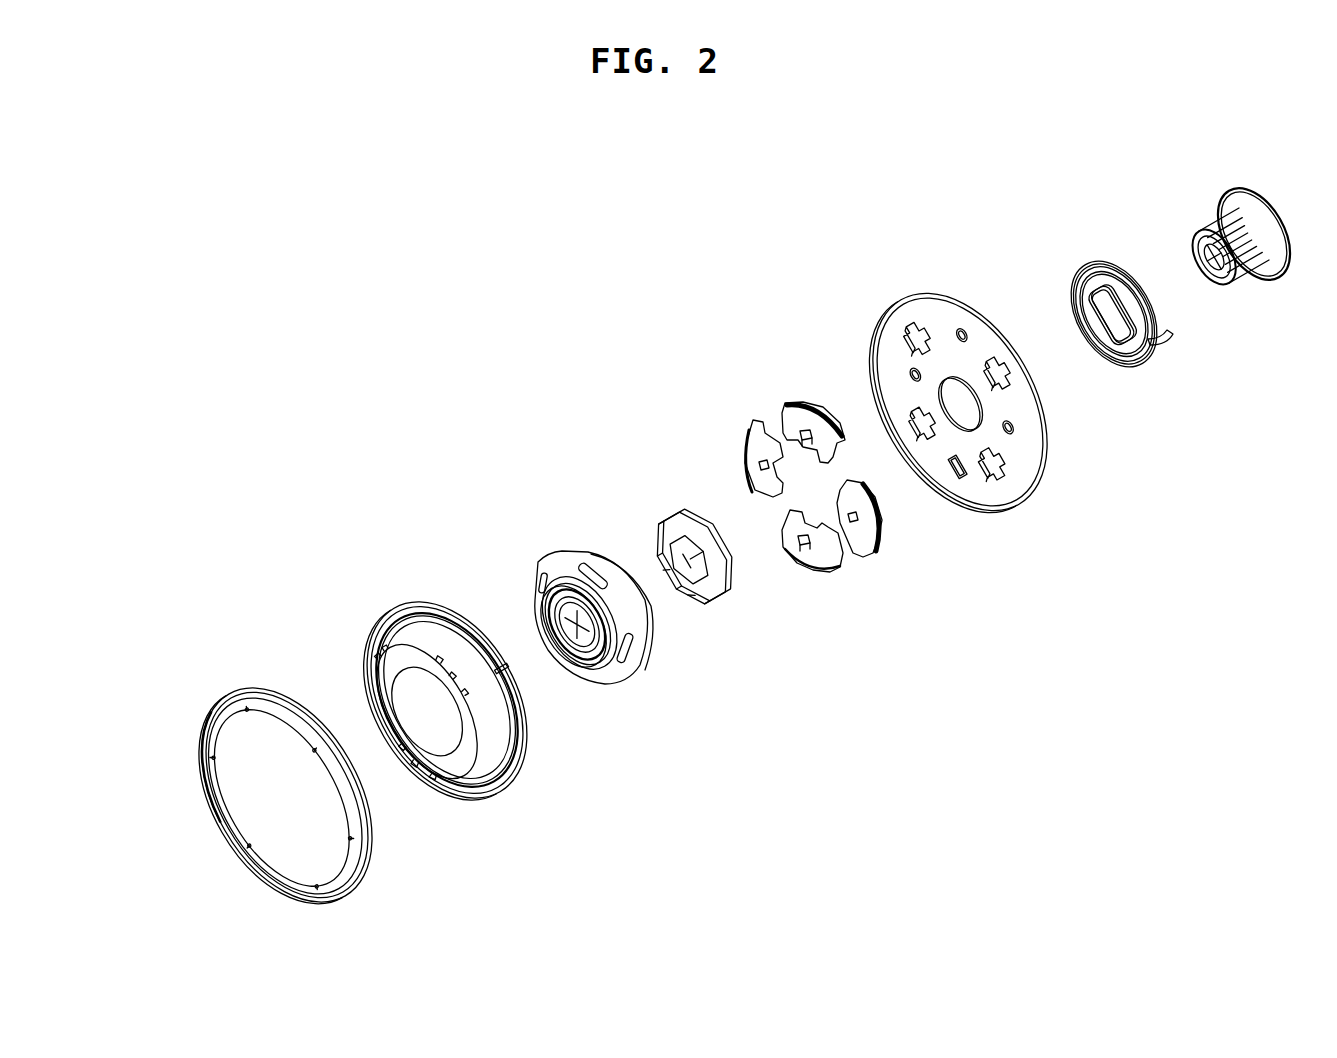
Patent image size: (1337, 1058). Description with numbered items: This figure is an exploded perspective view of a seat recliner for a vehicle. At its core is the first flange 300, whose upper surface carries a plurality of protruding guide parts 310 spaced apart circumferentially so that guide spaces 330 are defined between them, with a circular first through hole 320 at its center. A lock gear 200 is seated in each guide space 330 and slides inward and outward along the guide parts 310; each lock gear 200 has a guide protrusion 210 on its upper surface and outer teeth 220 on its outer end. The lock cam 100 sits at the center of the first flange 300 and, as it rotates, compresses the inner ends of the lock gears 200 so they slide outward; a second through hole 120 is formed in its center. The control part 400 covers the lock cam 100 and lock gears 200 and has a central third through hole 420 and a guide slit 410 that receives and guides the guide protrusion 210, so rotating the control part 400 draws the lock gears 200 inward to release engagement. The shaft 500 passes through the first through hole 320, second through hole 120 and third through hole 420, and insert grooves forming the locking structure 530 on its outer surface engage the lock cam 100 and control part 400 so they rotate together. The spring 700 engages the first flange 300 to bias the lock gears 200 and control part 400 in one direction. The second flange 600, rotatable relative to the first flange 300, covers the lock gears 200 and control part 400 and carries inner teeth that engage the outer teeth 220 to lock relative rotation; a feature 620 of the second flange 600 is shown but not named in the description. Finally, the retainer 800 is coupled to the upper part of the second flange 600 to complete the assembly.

The lock cam 100 is at (693, 561).
The second through hole 120 is at (698, 600).
The lock gear 200 is at (835, 497).
The guide protrusion 210 is at (802, 548).
The outer teeth 220 is at (790, 397).
The first flange 300 is at (945, 409).
The guide part 310 is at (915, 335).
The first through hole 320 is at (968, 409).
The guide space 330 is at (905, 357).
The control part 400 is at (578, 625).
The guide slit 410 is at (588, 556).
The third through hole 420 is at (574, 660).
The shaft 500 is at (1226, 255).
The locking structure 530 is at (1218, 222).
The second flange 600 is at (446, 703).
The cover opening 620 is at (436, 718).
The spring 700 is at (1088, 268).
The retainer 800 is at (244, 692).